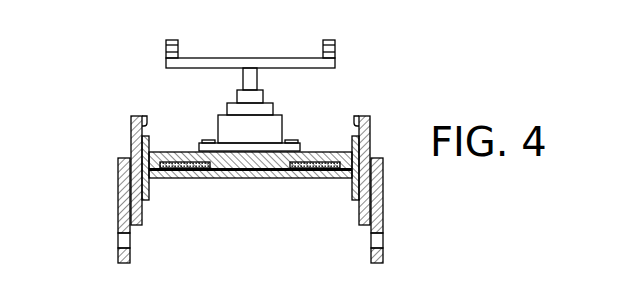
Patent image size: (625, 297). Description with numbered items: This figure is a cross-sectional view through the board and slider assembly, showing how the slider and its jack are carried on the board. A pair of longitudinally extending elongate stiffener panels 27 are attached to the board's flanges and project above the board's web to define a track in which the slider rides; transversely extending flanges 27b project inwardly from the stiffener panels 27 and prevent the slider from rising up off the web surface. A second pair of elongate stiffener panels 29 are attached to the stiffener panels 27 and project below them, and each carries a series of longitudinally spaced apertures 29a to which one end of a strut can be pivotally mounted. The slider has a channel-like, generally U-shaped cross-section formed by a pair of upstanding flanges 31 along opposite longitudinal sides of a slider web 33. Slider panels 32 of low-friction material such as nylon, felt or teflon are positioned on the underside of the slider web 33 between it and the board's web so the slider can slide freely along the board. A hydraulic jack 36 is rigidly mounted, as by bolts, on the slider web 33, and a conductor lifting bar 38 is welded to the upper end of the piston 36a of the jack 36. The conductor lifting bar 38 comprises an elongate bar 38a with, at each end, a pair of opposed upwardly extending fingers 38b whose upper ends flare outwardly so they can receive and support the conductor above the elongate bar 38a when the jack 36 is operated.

The longitudinally extending elongate stiffener panel 27 is at (212, 183).
The transversely extending flange 27b is at (137, 128).
The elongate stiffener panel 29 is at (118, 202).
The aperture 29a is at (122, 245).
The upstanding flange 31 is at (152, 141).
The slider panel 32 is at (200, 169).
The slider web 33 is at (179, 151).
The hydraulic jack 36 is at (278, 129).
The piston 36a is at (257, 76).
The conductor lifting bar 38 is at (250, 38).
The elongate bar 38a is at (292, 62).
The finger 38b is at (335, 50).